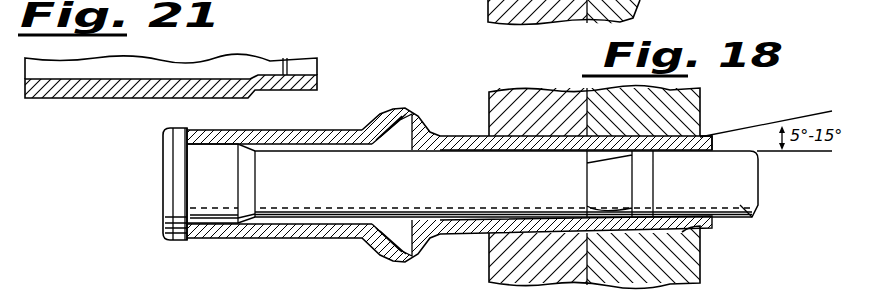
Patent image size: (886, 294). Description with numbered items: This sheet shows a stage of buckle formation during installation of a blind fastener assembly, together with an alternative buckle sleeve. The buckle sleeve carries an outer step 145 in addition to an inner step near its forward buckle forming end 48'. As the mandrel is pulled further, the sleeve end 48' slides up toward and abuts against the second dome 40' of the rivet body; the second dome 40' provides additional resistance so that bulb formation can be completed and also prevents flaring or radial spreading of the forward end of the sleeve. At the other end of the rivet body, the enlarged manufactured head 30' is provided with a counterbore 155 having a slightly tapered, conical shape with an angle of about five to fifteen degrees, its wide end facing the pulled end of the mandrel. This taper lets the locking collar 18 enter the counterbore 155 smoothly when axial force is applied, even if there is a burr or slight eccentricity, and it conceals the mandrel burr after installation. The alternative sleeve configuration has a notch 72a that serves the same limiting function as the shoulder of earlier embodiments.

In FIG. 18, the outer step 145 is at (377, 0).
In FIG. 18, the buckle forming end 48' is at (415, 115).
In FIG. 18, the second dome 40' is at (421, 254).
In FIG. 18, the manufactured head 30' is at (623, 110).
In FIG. 18, the counterbore 155 is at (702, 253).
In FIG. 18, the locking collar 18 is at (469, 185).
In FIG. 21, the notch 72a is at (62, 92).